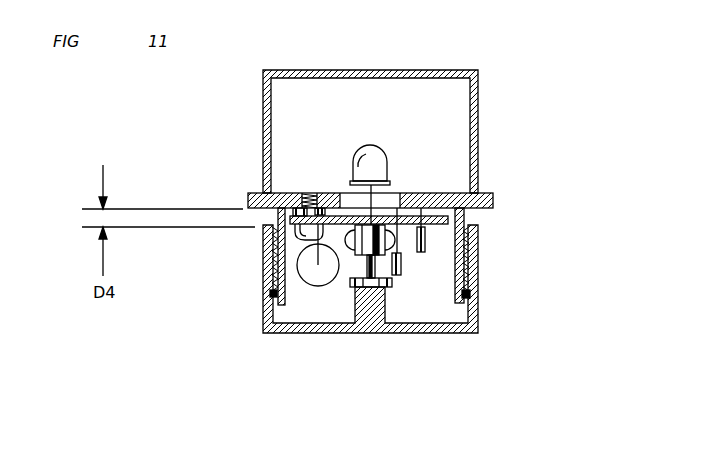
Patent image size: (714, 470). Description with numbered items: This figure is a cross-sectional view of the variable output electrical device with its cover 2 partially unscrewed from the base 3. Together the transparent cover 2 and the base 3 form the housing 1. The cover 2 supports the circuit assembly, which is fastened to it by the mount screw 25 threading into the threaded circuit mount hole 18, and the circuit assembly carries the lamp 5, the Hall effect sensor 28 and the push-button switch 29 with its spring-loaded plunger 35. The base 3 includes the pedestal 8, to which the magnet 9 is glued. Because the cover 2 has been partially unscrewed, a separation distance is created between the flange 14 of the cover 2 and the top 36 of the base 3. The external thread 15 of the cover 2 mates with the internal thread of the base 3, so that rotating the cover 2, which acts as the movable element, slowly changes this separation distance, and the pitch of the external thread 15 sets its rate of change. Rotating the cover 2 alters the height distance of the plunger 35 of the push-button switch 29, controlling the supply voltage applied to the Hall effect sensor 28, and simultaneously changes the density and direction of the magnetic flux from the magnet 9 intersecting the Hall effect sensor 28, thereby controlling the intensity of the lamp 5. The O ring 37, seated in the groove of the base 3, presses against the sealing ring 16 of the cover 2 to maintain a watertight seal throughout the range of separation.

The housing 1 is at (348, 297).
The cover 2 is at (477, 88).
The base 3 is at (474, 308).
The lamp 5 is at (376, 155).
The pedestal 8 is at (369, 310).
The magnet 9 is at (364, 283).
The flange 14 is at (250, 201).
The external thread 15 is at (363, 210).
The sealing ring 16 is at (270, 312).
The threaded circuit mount hole 18 is at (300, 195).
The mount screw 25 is at (298, 228).
The Hall effect sensor 28 is at (402, 263).
The push-button switch 29 is at (402, 262).
The plunger 35 is at (352, 258).
The top of base 36 is at (466, 229).
The O ring 37 is at (470, 293).